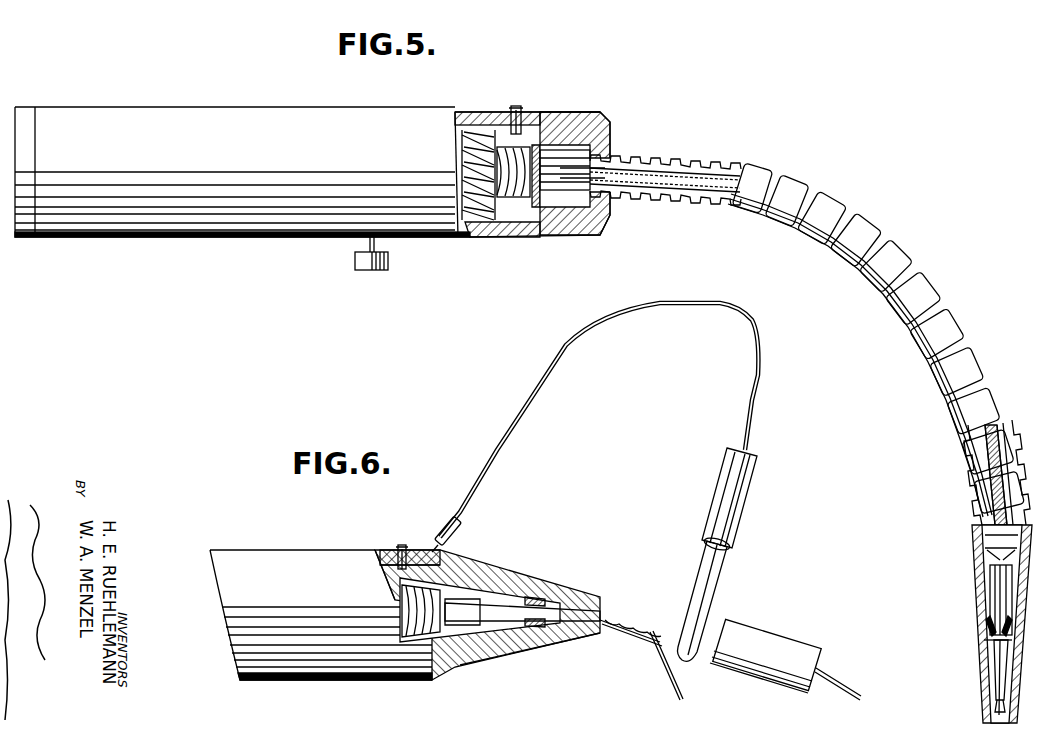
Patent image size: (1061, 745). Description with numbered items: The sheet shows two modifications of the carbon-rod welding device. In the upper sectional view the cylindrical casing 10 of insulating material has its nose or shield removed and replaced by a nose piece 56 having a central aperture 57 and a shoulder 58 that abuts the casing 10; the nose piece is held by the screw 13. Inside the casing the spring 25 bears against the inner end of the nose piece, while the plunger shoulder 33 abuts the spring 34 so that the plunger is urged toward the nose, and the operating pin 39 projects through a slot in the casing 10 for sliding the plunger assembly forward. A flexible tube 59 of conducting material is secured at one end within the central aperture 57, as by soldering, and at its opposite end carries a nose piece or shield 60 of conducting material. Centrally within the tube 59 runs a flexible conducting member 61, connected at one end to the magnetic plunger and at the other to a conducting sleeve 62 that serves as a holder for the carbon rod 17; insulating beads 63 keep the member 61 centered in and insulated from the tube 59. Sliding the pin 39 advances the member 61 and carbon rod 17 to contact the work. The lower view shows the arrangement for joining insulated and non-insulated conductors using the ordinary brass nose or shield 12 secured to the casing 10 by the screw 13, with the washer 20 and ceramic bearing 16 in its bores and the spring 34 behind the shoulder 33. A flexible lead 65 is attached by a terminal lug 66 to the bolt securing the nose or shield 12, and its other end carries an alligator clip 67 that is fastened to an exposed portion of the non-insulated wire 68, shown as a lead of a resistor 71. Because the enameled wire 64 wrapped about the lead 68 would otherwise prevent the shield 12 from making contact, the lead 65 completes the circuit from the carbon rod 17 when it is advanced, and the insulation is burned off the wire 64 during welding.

In FIG. 5, the cylindrical casing 10 is at (470, 112).
In FIG. 6, the cylindrical casing 10 is at (372, 560).
In FIG. 6, the nose or shield 12 is at (488, 578).
In FIG. 5, the screw 13 is at (516, 106).
In FIG. 6, the screw 13 is at (398, 550).
In FIG. 6, the bearing 16 is at (545, 598).
In FIG. 5, the carbon welding rod 17 is at (993, 667).
In FIG. 6, the carbon welding rod 17 is at (516, 652).
In FIG. 6, the washer 20 is at (534, 598).
In FIG. 5, the spring 25 is at (480, 237).
In FIG. 5, the shoulder 33 is at (545, 237).
In FIG. 6, the shoulder 33 is at (444, 568).
In FIG. 5, the spring 34 is at (500, 237).
In FIG. 6, the spring 34 is at (402, 606).
In FIG. 5, the operating pin 39 is at (376, 270).
In FIG. 5, the nose piece 56 is at (604, 128).
In FIG. 5, the central aperture 57 is at (600, 158).
In FIG. 5, the shoulder 58 is at (545, 112).
In FIG. 5, the flexible tube 59 is at (803, 188).
In FIG. 5, the nose piece or shield 60 is at (978, 703).
In FIG. 5, the flexible conducting member 61 is at (688, 200).
In FIG. 5, the conducting sleeve 62 is at (995, 597).
In FIG. 5, the insulating beads 63 is at (985, 636).
In FIG. 6, the enameled wire 64 is at (662, 665).
In FIG. 6, the flexible lead 65 is at (530, 402).
In FIG. 6, the terminal lug 66 is at (432, 548).
In FIG. 6, the alligator clip 67 is at (712, 600).
In FIG. 6, the non-insulated wire 68 is at (632, 632).
In FIG. 6, the resistor 71 is at (770, 650).